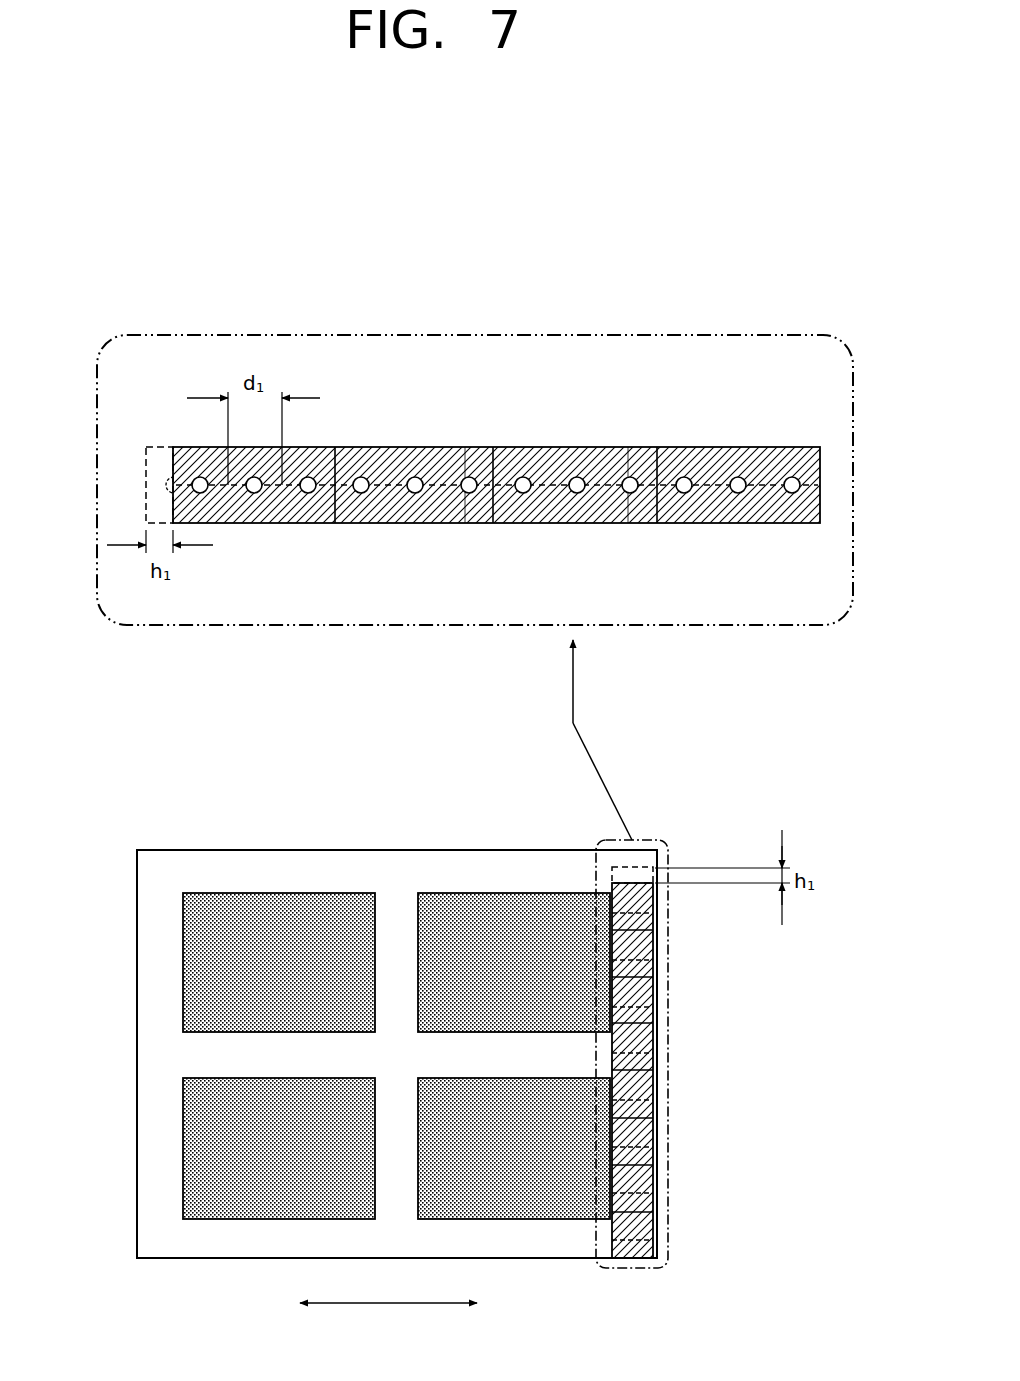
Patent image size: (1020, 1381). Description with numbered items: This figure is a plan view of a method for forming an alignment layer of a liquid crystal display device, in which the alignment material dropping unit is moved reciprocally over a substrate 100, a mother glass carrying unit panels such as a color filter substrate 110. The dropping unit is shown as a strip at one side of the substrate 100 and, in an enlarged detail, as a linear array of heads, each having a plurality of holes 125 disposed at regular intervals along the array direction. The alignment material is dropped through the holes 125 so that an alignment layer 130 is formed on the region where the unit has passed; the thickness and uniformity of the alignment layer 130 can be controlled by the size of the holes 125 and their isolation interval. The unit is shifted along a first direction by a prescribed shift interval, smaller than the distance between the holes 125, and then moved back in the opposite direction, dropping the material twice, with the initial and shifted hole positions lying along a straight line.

The substrate 100 is at (134, 847).
The color filter substrate 110 is at (480, 888).
The hole 125 is at (549, 447).
The alignment layer 130 is at (238, 905).